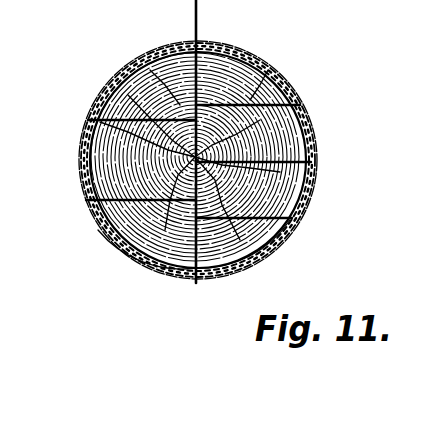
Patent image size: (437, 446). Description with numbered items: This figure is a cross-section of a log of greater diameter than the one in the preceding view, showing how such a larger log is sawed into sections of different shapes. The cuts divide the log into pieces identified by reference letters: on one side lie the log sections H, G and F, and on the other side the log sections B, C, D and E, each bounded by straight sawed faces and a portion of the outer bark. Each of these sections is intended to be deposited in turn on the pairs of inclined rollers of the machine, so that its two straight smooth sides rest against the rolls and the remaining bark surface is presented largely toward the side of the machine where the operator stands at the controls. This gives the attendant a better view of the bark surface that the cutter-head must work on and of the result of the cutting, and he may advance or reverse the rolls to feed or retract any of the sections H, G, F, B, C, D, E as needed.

The log section H is at (138, 74).
The log section G is at (93, 157).
The log section F is at (122, 235).
The log section B is at (240, 70).
The log section C is at (293, 127).
The log section D is at (297, 192).
The log section E is at (247, 250).